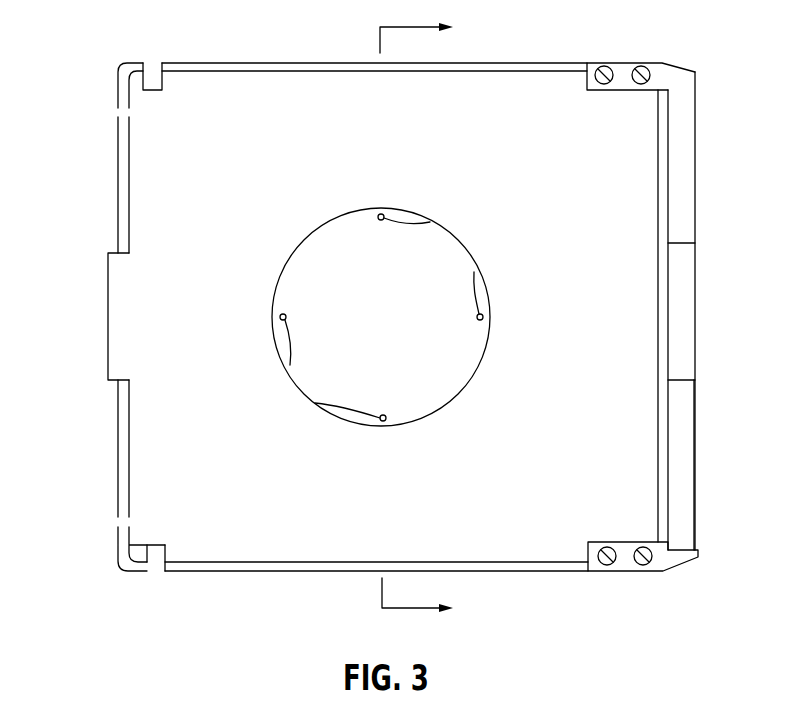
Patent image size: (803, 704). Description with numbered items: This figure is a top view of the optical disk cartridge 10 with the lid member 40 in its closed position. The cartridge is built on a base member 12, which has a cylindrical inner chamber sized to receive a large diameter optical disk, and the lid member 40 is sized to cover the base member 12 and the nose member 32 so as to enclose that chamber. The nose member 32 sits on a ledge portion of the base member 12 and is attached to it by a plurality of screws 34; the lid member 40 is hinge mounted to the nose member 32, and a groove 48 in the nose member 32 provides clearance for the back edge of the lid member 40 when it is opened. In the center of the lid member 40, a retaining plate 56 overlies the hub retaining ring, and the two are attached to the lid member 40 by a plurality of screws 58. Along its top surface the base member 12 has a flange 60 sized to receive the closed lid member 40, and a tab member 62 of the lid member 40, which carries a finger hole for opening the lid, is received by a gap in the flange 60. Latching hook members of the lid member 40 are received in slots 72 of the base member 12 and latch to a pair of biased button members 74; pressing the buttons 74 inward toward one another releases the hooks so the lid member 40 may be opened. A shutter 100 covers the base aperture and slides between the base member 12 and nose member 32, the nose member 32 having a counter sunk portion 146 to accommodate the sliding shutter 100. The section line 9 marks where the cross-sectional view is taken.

The optical disk cartridge 10 is at (528, 636).
The base member 12 is at (118, 452).
The nose member 32 is at (680, 78).
The screws 34 is at (640, 64).
The lid member 40 is at (206, 155).
The groove 48 is at (664, 135).
The retaining plate 56 is at (297, 248).
The screws 58 is at (474, 272).
The flange 60 is at (322, 62).
The tab member 62 is at (108, 290).
The slots 72 is at (152, 70).
The biased button members 74 is at (122, 69).
The shutter 100 is at (695, 280).
The counter sunk portion 146 is at (695, 460).
The section line 9- 9 is at (427, 318).